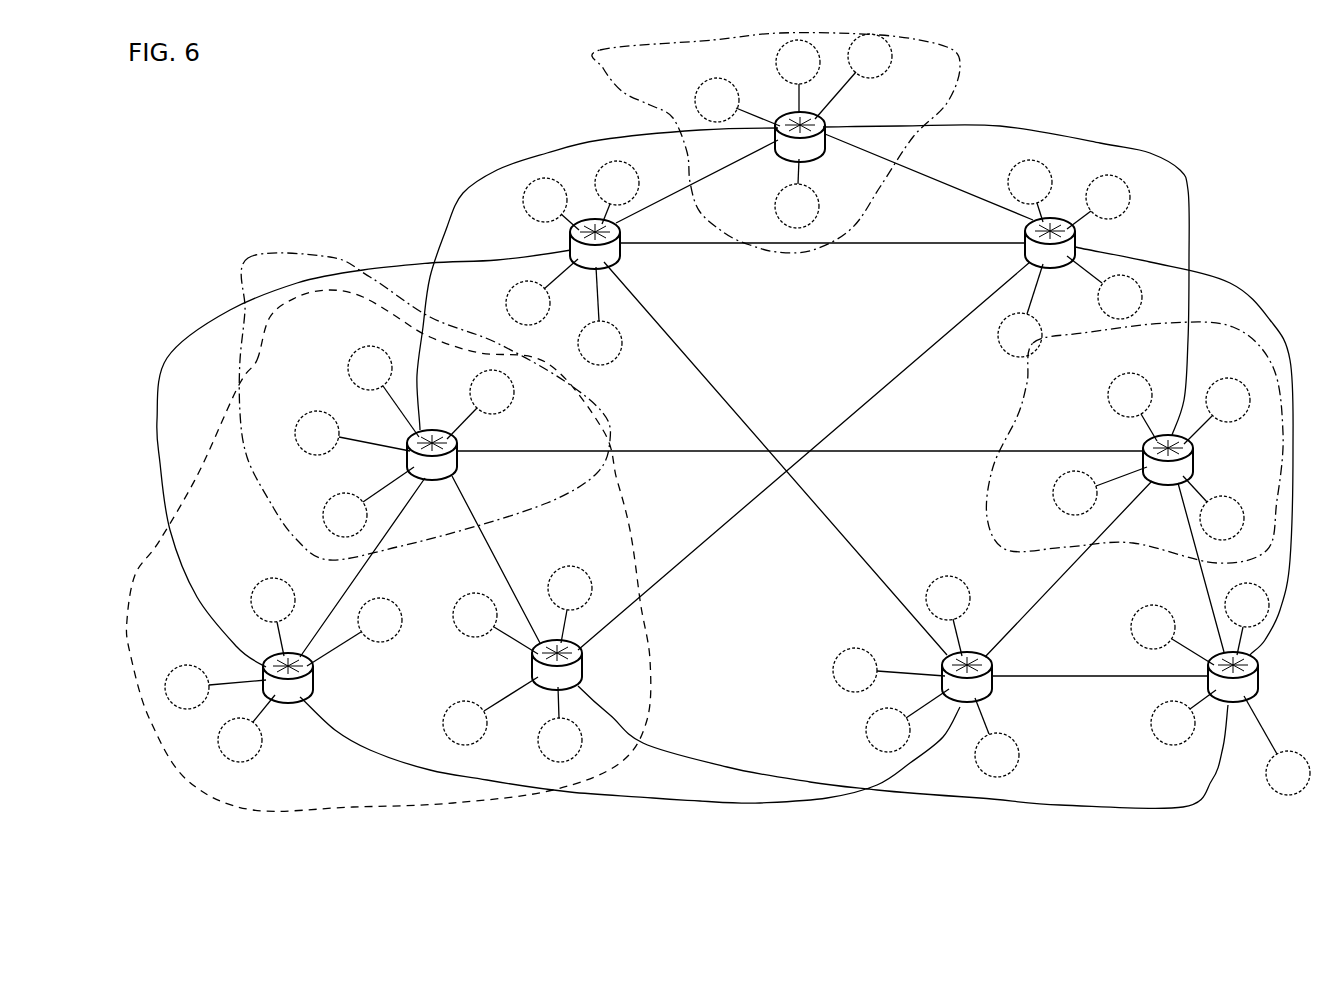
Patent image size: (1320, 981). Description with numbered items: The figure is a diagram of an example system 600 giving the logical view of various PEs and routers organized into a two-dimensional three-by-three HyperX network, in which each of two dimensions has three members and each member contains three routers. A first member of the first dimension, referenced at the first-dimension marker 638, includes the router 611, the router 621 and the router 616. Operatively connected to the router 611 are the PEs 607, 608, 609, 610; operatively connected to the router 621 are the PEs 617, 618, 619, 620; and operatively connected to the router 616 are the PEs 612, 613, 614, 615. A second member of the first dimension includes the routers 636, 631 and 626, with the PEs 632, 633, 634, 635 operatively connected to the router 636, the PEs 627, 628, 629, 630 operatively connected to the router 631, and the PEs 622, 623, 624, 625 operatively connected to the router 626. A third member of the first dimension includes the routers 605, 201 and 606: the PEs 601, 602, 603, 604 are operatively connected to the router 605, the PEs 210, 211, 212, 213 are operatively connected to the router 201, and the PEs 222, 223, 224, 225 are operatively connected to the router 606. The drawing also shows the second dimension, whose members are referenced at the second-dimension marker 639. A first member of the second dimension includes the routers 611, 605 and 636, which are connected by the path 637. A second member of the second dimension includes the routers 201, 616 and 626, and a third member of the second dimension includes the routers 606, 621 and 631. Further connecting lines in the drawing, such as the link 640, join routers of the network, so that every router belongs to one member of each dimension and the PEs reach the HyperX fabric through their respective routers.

The system 600 is at (1285, 78).
The router 201 is at (622, 256).
The PE 210 is at (524, 201).
The PE 211 is at (508, 305).
The PE 212 is at (618, 352).
The PE 213 is at (637, 186).
The PE 222 is at (1010, 178).
The PE 223 is at (1002, 347).
The PE 224 is at (1141, 298).
The PE 225 is at (1128, 202).
The PE 601 is at (706, 87).
The PE 602 is at (780, 57).
The PE 603 is at (892, 62).
The PE 604 is at (777, 203).
The router 605 is at (822, 152).
The router 606 is at (1027, 255).
The PE 607 is at (362, 350).
The PE 608 is at (319, 412).
The PE 609 is at (331, 498).
The PE 610 is at (505, 410).
The router 611 is at (459, 462).
The PE 612 is at (272, 579).
The PE 613 is at (185, 666).
The PE 614 is at (261, 748).
The PE 615 is at (383, 599).
The router 616 is at (313, 688).
The PE 617 is at (570, 567).
The PE 618 is at (470, 594).
The PE 619 is at (445, 722).
The PE 620 is at (580, 752).
The router 621 is at (581, 672).
The PE 622 is at (945, 577).
The PE 623 is at (850, 649).
The PE 624 is at (868, 727).
The PE 625 is at (977, 760).
The router 626 is at (992, 690).
The PE 627 is at (1150, 606).
The PE 628 is at (1175, 744).
The PE 629 is at (1268, 779).
The PE 630 is at (1243, 584).
The router 631 is at (1258, 683).
The PE 632 is at (1122, 375).
The PE 633 is at (1054, 493).
The PE 634 is at (1240, 504).
The PE 635 is at (1228, 379).
The router 636 is at (1192, 470).
The path 637 is at (548, 153).
The first member of the first dimension D1 638 is at (623, 543).
The second dimension D2 639 is at (290, 257).
The link 640 is at (1140, 496).